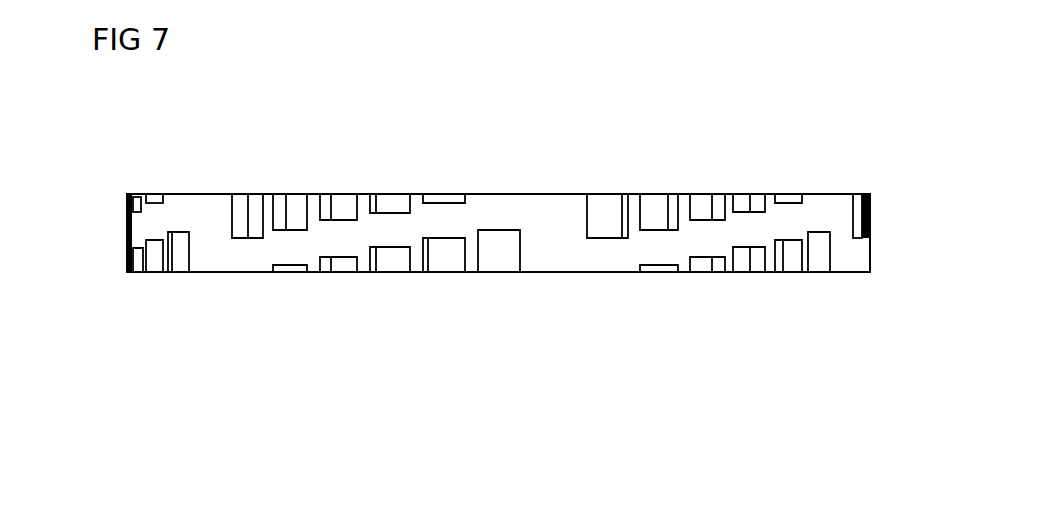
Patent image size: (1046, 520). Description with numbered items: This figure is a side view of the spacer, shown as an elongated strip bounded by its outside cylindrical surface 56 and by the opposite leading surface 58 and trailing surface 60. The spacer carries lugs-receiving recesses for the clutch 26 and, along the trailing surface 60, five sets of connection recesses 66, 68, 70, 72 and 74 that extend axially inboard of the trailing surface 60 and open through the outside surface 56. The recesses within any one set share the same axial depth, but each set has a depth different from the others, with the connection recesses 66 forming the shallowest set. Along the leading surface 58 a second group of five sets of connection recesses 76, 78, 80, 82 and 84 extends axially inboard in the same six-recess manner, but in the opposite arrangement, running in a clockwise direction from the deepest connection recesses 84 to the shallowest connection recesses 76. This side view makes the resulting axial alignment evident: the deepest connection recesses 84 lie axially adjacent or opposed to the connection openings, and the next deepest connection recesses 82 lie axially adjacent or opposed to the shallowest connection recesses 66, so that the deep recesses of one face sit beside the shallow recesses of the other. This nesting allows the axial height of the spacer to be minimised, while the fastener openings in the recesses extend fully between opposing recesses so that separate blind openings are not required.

The clutch 26 is at (83, 211).
The outside cylindrical surface 56 is at (869, 232).
The leading surface 58 is at (572, 272).
The trailing surface 60 is at (518, 194).
The connection recesses 66 is at (445, 200).
The connection recesses 68 is at (393, 207).
The connection recesses 70 is at (340, 198).
The connection recesses 72 is at (290, 200).
The connection recesses 74 is at (240, 198).
The connection recesses 76 is at (288, 270).
The connection recesses 78 is at (348, 268).
The connection recesses 80 is at (400, 272).
The connection recesses 82 is at (153, 270).
The connection recesses 84 is at (175, 270).